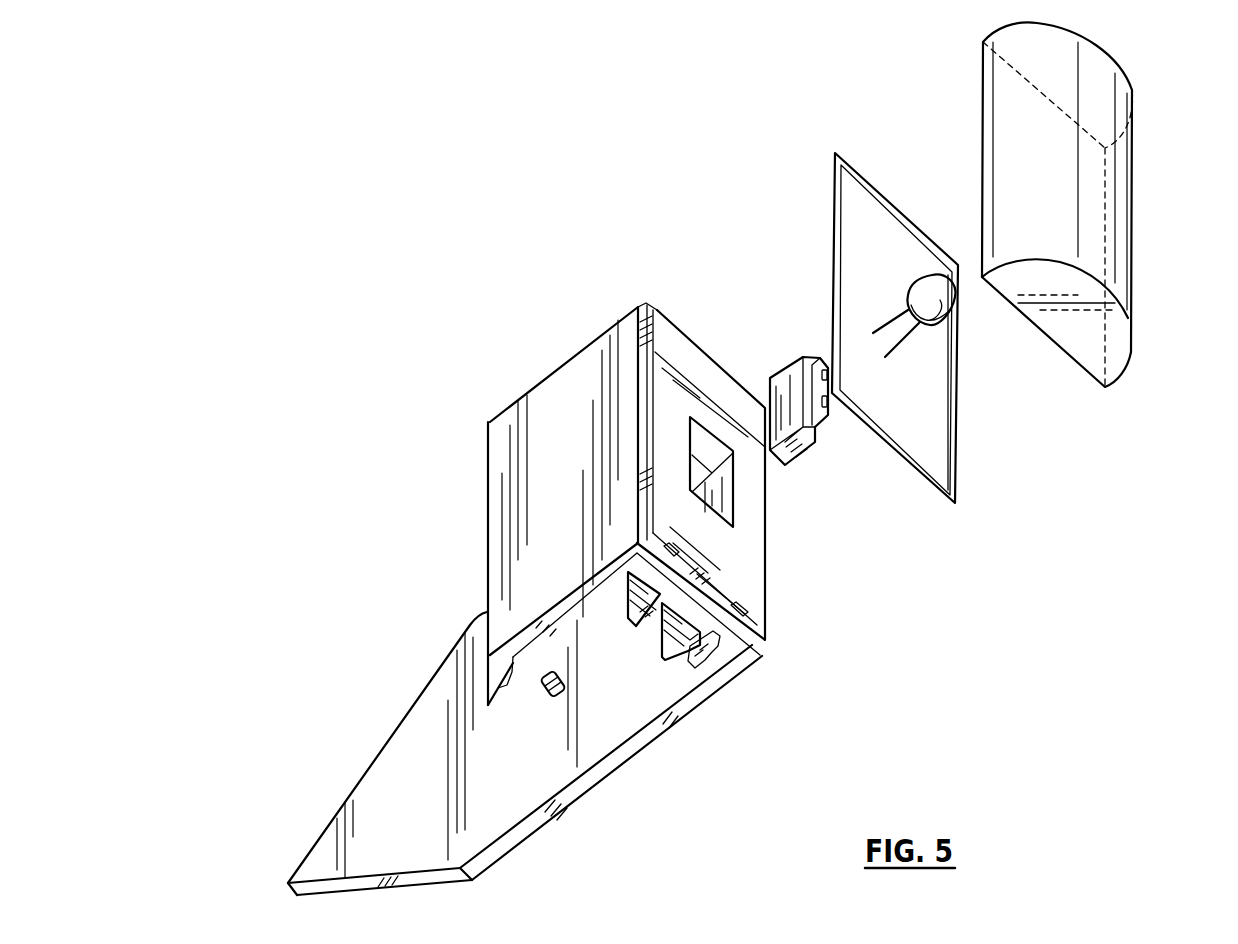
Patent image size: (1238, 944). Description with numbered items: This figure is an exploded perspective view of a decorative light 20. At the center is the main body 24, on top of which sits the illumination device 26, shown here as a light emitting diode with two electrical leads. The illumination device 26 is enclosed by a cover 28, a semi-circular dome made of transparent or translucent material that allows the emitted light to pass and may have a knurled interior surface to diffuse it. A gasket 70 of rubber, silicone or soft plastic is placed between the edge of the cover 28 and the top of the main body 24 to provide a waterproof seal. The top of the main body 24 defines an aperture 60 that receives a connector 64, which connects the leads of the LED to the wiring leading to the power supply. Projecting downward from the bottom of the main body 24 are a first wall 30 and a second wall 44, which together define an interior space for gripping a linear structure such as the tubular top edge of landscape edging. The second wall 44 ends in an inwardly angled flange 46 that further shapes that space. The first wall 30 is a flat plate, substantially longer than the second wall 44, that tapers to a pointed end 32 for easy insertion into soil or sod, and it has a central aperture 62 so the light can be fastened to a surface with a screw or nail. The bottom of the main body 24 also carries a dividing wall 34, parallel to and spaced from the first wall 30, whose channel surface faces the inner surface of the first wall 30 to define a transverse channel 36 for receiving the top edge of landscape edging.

The decorative light 20 is at (398, 266).
The main body 24 is at (770, 675).
The illumination device 26 is at (960, 304).
The cover 28 is at (1122, 203).
The first wall 30 is at (480, 818).
The pointed end 32 is at (290, 883).
The dividing wall 34 is at (693, 635).
The transverse channel 36 is at (684, 672).
The second wall 44 is at (532, 509).
The inwardly angled flange 46 is at (498, 684).
The aperture 60 is at (707, 449).
The central aperture 62 is at (556, 693).
The connector 64 is at (806, 470).
The gasket 70 is at (958, 478).